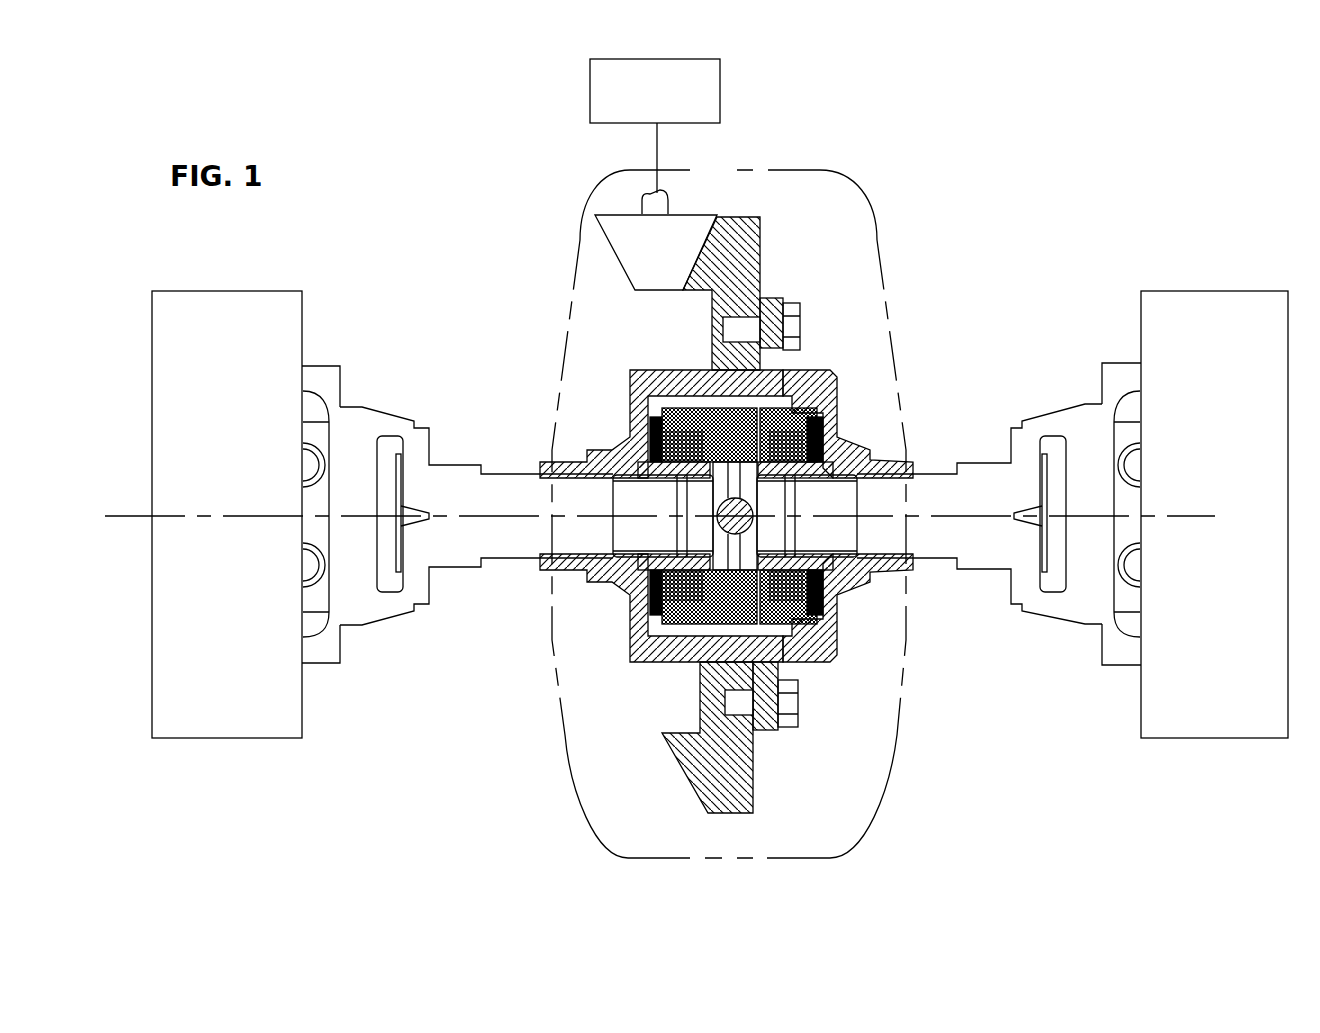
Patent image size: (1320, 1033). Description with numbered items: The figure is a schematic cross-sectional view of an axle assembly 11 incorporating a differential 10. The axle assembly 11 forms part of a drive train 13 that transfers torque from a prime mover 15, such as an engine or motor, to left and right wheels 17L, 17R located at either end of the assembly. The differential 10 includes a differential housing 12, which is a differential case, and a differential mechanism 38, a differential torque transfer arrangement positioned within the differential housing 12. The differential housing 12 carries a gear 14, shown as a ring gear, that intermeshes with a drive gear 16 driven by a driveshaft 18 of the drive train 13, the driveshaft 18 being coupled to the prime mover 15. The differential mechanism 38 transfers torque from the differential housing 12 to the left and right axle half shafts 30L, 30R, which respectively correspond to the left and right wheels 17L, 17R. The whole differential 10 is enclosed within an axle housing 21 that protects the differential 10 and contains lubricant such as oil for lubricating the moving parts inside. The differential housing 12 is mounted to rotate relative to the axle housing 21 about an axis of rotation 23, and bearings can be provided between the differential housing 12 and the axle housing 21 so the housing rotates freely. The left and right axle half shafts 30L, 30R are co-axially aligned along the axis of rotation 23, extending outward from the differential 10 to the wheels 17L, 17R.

The differential 10 is at (848, 359).
The axle assembly 11 is at (978, 404).
The differential housing 12 is at (628, 385).
The drive train 13 is at (1064, 228).
The gear 14 is at (767, 240).
The prime mover 15 is at (720, 90).
The drive gear 16 is at (692, 213).
The left wheel 17L is at (252, 291).
The right wheel 17R is at (1208, 291).
The driveshaft 18 is at (640, 210).
The axle housing 21 is at (877, 227).
The axis of rotation 23 is at (130, 511).
The left axle half shaft 30L is at (505, 552).
The right axle half shaft 30R is at (981, 548).
The differential mechanism 38 is at (684, 610).